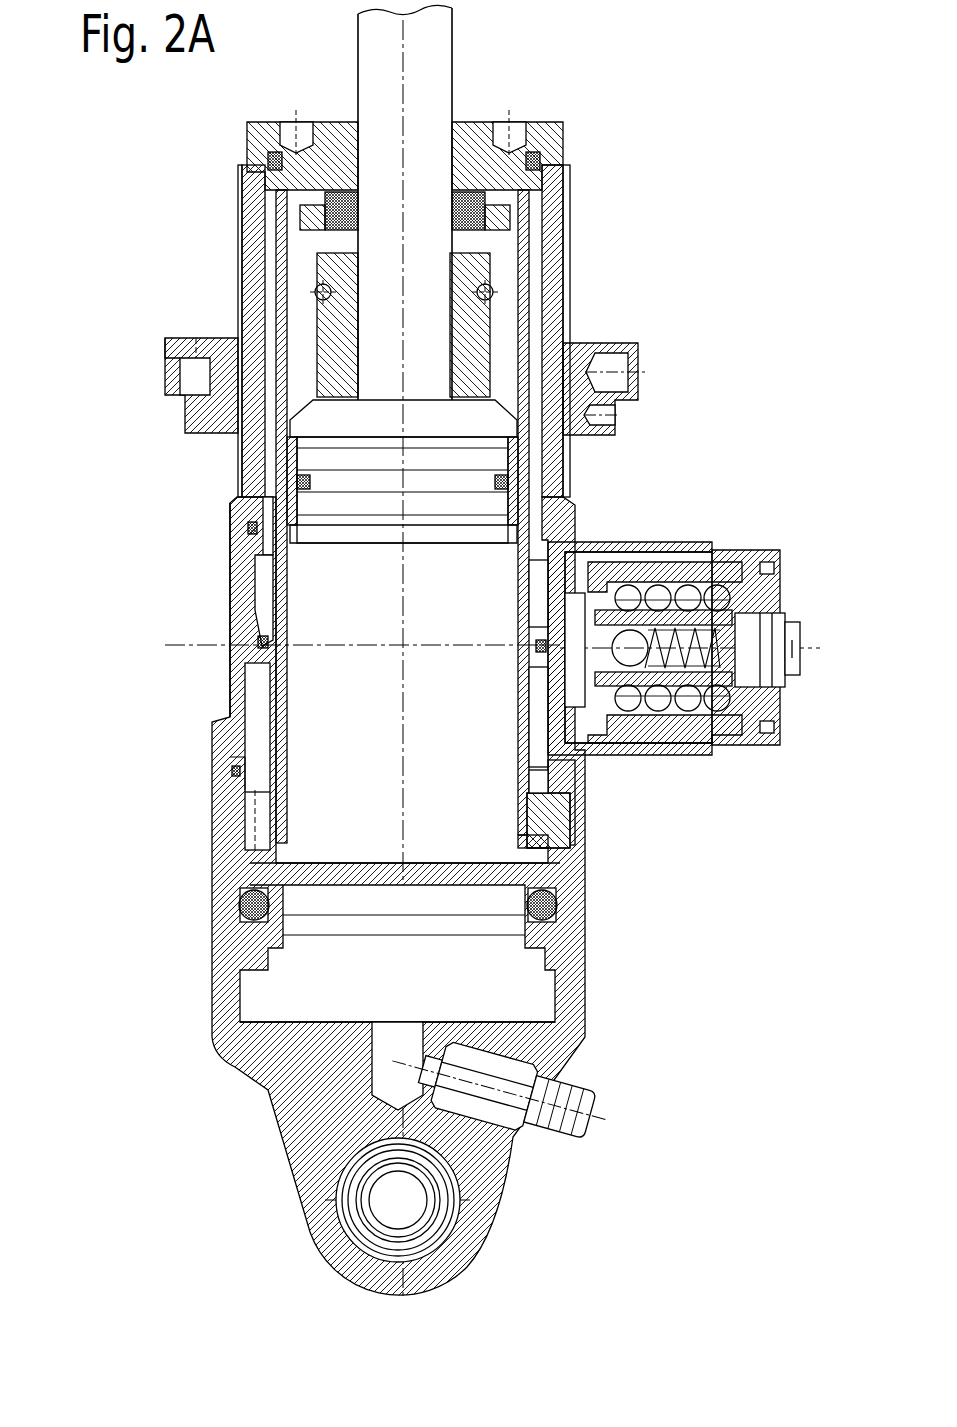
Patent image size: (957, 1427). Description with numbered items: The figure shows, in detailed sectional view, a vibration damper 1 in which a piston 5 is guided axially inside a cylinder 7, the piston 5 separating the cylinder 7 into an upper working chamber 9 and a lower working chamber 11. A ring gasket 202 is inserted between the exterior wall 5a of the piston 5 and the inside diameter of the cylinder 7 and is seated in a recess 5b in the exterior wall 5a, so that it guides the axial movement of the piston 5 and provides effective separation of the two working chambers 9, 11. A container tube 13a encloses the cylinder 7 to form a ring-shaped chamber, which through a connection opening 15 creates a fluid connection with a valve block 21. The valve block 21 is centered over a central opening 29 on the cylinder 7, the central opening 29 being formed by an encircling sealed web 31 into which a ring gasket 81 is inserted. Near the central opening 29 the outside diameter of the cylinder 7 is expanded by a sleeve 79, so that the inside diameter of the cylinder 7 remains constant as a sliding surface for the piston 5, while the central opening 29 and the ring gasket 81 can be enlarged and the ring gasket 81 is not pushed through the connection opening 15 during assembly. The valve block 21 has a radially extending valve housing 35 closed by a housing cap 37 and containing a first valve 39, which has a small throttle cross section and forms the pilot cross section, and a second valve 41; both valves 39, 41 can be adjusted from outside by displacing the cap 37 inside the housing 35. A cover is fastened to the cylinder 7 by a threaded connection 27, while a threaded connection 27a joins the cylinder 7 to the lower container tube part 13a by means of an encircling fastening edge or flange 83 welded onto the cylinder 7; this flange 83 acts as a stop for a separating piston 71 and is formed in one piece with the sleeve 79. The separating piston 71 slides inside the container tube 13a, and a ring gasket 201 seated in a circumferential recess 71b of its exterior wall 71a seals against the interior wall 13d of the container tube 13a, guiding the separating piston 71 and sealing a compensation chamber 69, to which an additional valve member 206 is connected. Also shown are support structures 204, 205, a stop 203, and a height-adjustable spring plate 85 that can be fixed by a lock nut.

The vibration damper 1 is at (135, 745).
The piston 5 is at (322, 458).
The exterior wall of the piston 5a is at (325, 452).
The recess in the exterior wall of the piston 5b is at (305, 495).
The cylinder 7 is at (525, 263).
The upper working chamber 9 is at (300, 330).
The lower working chamber 11 is at (465, 780).
The container tube 13a is at (585, 997).
The interior wall of the container tube 13d is at (232, 948).
The connection opening 15 is at (527, 300).
The valve block 21 is at (585, 755).
The threaded connection 27 is at (523, 222).
The threaded connection 27a is at (225, 825).
The central opening 29 is at (530, 667).
The web 31 is at (238, 530).
The valve housing 35 is at (718, 760).
The housing cap 37 is at (735, 560).
The first valve 39 is at (637, 722).
The second valve 41 is at (600, 555).
The compensation chamber 69 is at (226, 1045).
The separating piston 71 is at (555, 887).
The exterior wall of the separating piston 71a is at (250, 905).
The circumferential recess 71b is at (250, 878).
The sleeve 79 is at (255, 672).
The ring gasket 81 is at (258, 580).
The fastening edge or flange 83 is at (540, 822).
The spring plate 85 is at (577, 340).
The ring gasket 201 is at (560, 905).
The ring gasket 202 is at (507, 478).
The stop 203 is at (322, 265).
The support structure 204 is at (318, 212).
The support structure 205 is at (338, 130).
The additional valve member 206 is at (580, 1106).